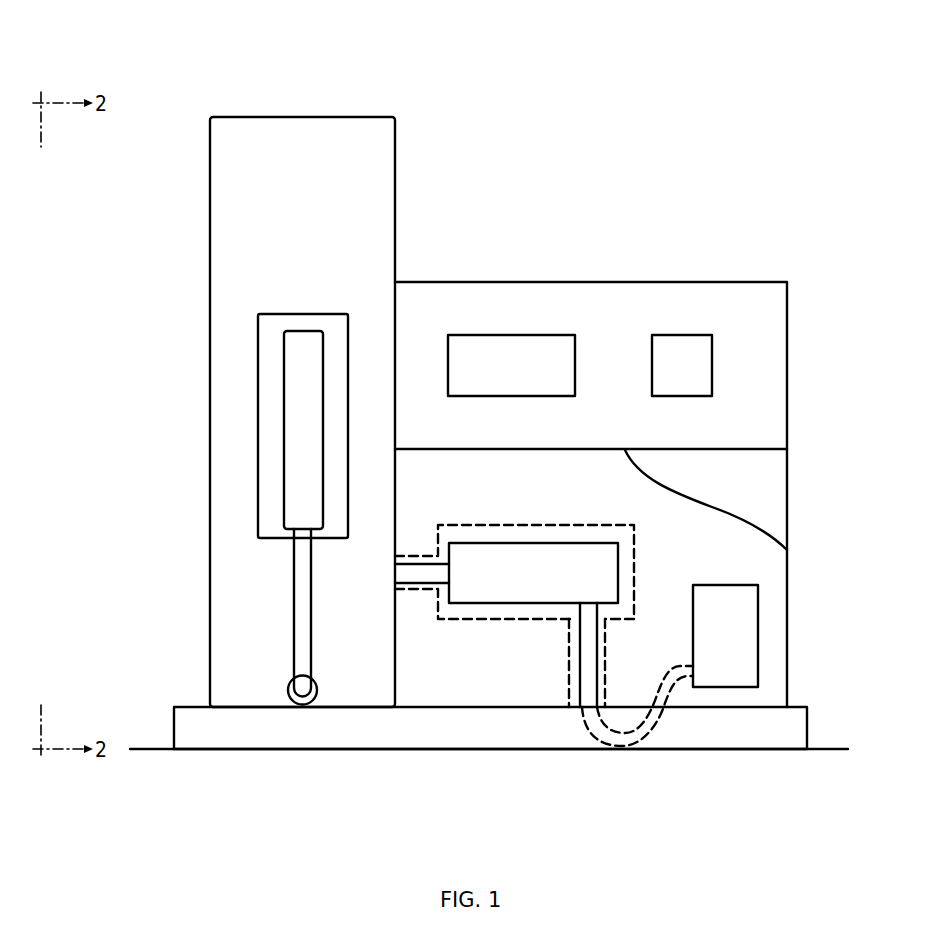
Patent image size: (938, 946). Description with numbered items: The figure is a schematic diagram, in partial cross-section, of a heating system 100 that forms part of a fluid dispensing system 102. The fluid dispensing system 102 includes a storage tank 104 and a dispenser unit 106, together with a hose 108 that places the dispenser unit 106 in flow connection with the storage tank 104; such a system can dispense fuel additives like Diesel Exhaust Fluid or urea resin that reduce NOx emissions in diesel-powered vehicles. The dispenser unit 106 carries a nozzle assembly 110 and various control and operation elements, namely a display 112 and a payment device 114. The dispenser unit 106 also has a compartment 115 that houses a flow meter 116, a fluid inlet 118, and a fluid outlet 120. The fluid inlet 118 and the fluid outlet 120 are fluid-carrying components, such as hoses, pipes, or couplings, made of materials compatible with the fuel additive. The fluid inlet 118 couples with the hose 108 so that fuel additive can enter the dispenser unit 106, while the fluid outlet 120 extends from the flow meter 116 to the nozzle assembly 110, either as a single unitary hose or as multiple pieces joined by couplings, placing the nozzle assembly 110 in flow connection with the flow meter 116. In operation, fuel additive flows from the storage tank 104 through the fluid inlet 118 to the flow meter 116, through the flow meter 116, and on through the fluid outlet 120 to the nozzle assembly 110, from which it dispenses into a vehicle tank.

The heating system 100 is at (607, 652).
The fluid dispensing system 102 is at (178, 76).
The storage tank 104 is at (740, 646).
The dispenser unit 106 is at (599, 456).
The hose 108 is at (653, 733).
The nozzle assembly 110 is at (183, 325).
The display 112 is at (526, 376).
The payment device 114 is at (695, 376).
The compartment 115 is at (773, 636).
The flow meter 116 is at (552, 584).
The fluid inlet 118 is at (578, 661).
The fluid outlet 120 is at (408, 563).